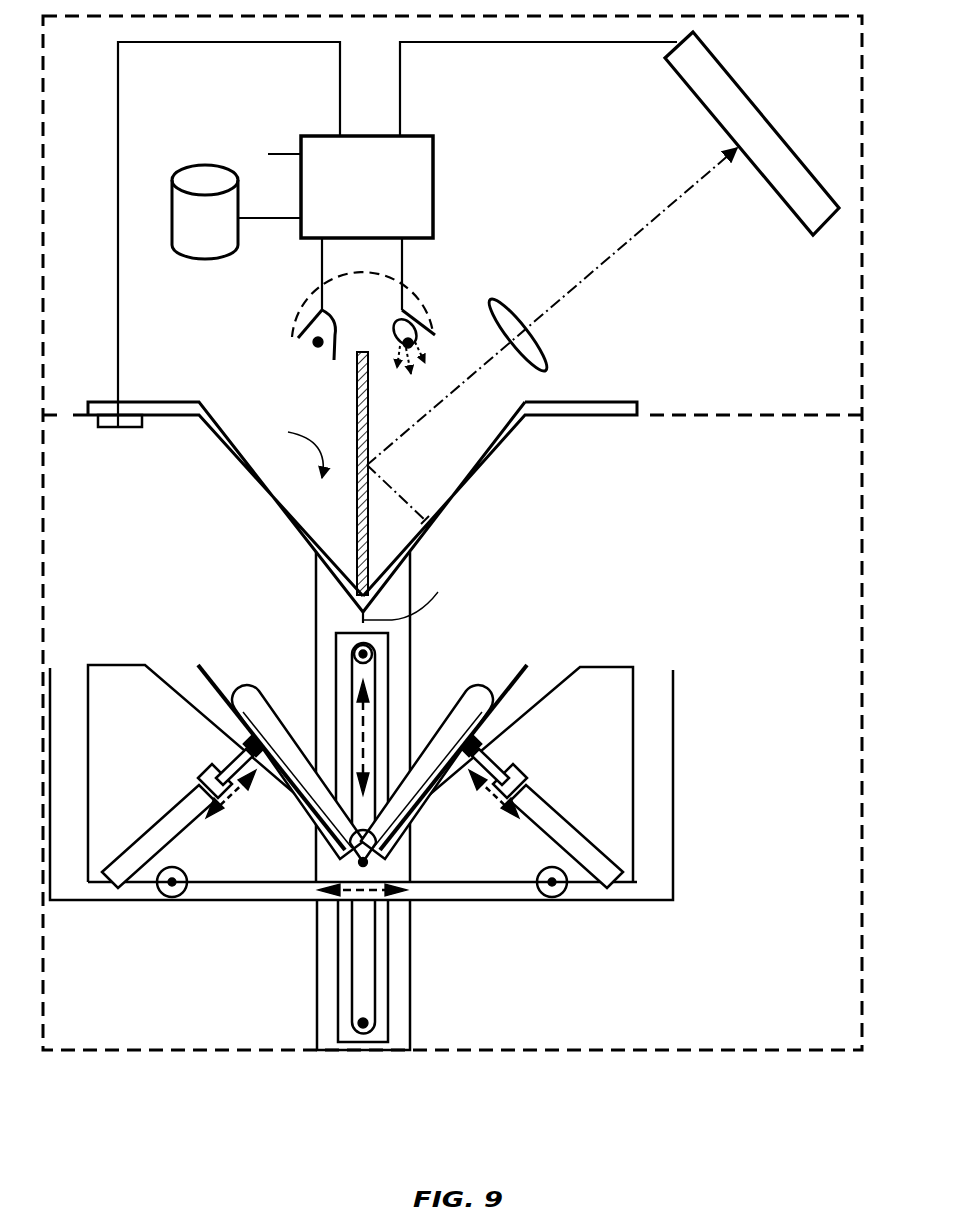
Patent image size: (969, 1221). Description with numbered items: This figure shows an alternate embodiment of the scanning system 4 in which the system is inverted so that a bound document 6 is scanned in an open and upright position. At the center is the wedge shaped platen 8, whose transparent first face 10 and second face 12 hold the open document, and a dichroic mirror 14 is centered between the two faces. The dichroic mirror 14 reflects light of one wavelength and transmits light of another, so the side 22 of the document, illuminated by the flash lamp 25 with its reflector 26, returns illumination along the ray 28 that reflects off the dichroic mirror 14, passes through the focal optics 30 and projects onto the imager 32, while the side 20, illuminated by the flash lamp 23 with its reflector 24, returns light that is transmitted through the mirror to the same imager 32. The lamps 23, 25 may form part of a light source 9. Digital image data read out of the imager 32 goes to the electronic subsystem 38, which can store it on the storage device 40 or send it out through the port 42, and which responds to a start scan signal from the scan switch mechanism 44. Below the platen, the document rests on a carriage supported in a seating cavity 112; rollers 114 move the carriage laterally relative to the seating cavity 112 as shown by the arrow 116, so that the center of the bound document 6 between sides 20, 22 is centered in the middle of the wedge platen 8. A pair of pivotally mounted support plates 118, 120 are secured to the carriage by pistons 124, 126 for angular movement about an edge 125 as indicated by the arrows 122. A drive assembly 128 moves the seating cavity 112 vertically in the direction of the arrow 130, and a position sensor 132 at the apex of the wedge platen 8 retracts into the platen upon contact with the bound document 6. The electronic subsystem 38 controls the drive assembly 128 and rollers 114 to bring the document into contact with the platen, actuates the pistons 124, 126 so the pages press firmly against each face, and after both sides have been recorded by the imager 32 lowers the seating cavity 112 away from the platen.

The scanning system 4 is at (713, 1050).
The bound document 6 is at (452, 682).
The wedge shaped platen 8 is at (294, 448).
The light source 9 is at (382, 282).
The first face 10 is at (230, 455).
The second face 12 is at (483, 468).
The dichroic mirror 14 is at (357, 422).
The side of bound document 20 is at (253, 690).
The side of bound document 22 is at (472, 688).
The flash lamp 23 is at (313, 345).
The reflector 24 is at (308, 318).
The flash lamp 25 is at (400, 336).
The reflector 26 is at (425, 330).
The ray 28 is at (634, 236).
The focal optics 30 is at (543, 343).
The imager 32 is at (752, 103).
The electronic subsystem (ESS) 38 is at (433, 167).
The storage device 40 is at (205, 163).
The port 42 is at (272, 160).
The scan switch mechanism 44 is at (120, 427).
The seating cavity 112 is at (678, 758).
The rollers 114 is at (187, 893).
The arrow 116 is at (385, 900).
The support plate 118 is at (203, 675).
The support plate 120 is at (523, 682).
The arrows 122 is at (238, 792).
The piston 124 is at (168, 818).
The edge 125 is at (360, 862).
The piston 126 is at (547, 818).
The drive assembly 128 is at (315, 986).
The arrow 130 is at (363, 728).
The position sensor 132 is at (417, 595).